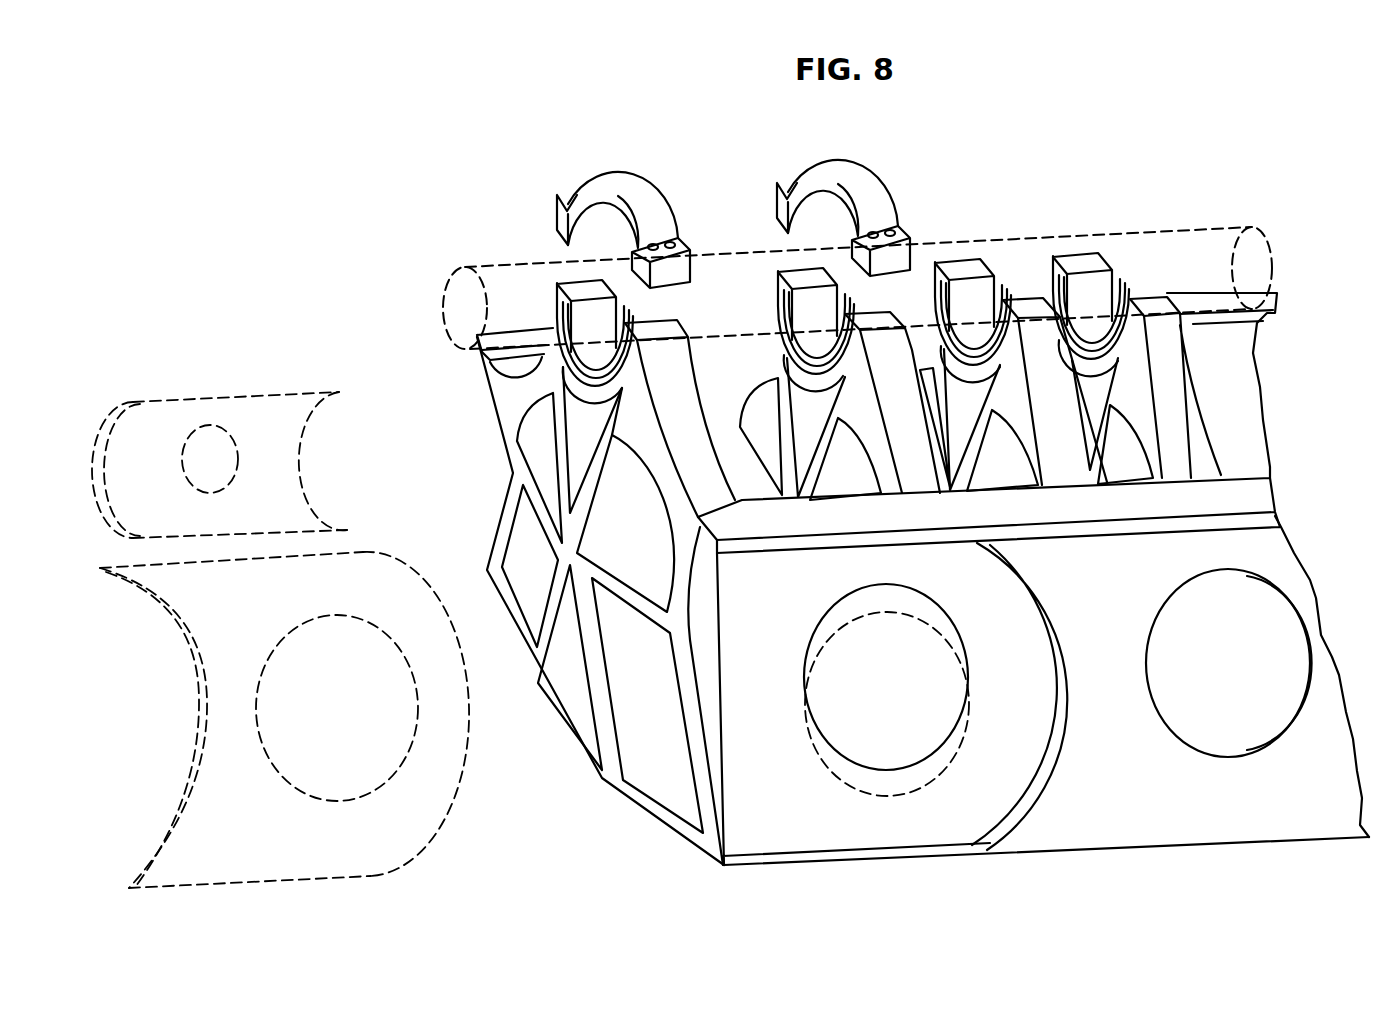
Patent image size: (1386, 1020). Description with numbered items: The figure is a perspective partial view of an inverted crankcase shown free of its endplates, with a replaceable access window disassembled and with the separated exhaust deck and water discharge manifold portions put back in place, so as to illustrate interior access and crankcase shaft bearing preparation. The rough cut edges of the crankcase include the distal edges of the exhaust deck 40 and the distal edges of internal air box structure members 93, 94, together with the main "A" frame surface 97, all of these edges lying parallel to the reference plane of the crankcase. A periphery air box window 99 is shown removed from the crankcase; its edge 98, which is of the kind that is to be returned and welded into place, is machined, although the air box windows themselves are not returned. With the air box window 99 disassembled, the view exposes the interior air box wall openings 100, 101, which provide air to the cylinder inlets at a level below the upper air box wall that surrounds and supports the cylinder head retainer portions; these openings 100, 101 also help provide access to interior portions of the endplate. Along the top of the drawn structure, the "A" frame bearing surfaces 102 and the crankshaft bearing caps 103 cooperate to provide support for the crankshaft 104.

The exhaust deck 40 is at (577, 596).
The internal air box structure member 93 is at (597, 664).
The internal air box structure member 94 is at (697, 722).
The main "A" frame surface 97 is at (515, 390).
The edge of periphery air box window 98 is at (212, 716).
The air box window 99 is at (300, 640).
The interior air box wall opening 100 is at (834, 627).
The interior air box wall opening 101 is at (938, 609).
The "A" frame bearing surface 102 is at (583, 313).
The crankshaft bearing cap 103 is at (566, 208).
The crankshaft 104 is at (1093, 237).